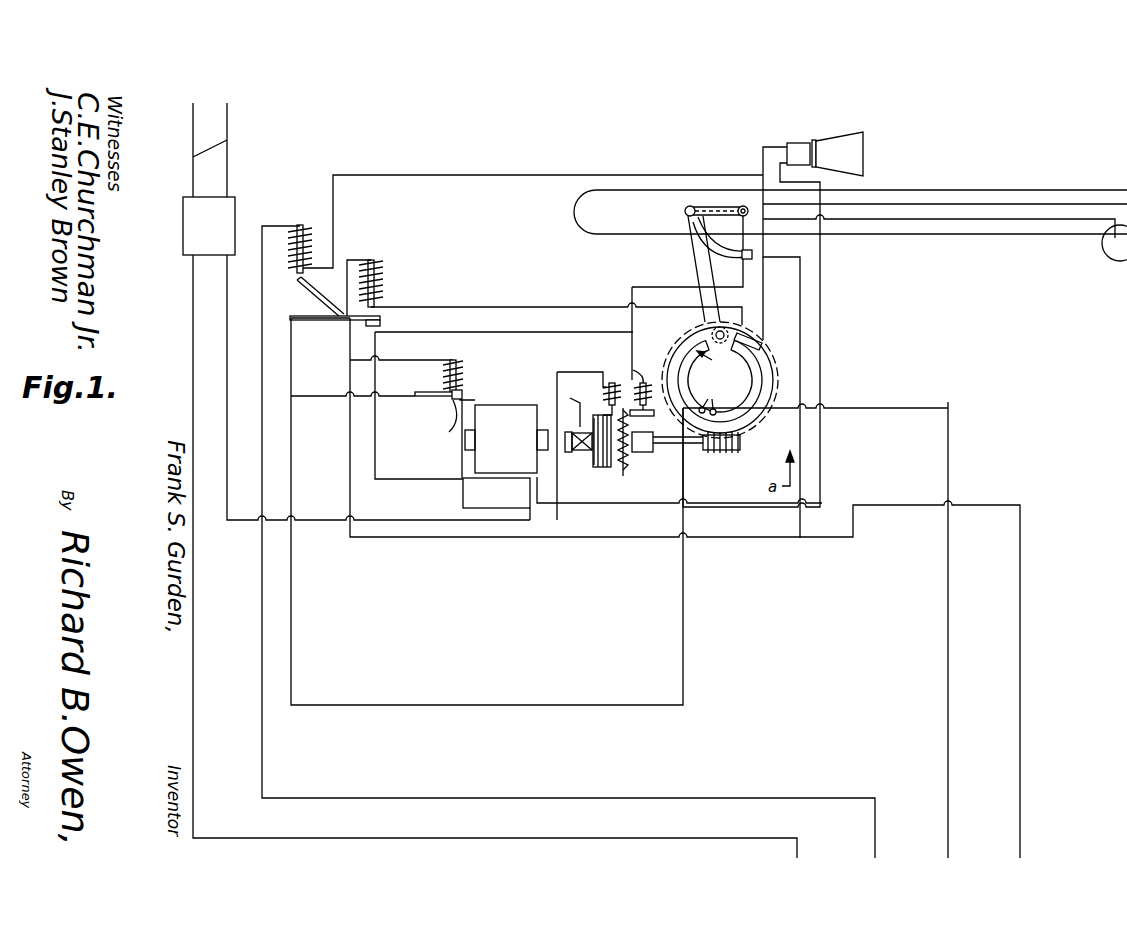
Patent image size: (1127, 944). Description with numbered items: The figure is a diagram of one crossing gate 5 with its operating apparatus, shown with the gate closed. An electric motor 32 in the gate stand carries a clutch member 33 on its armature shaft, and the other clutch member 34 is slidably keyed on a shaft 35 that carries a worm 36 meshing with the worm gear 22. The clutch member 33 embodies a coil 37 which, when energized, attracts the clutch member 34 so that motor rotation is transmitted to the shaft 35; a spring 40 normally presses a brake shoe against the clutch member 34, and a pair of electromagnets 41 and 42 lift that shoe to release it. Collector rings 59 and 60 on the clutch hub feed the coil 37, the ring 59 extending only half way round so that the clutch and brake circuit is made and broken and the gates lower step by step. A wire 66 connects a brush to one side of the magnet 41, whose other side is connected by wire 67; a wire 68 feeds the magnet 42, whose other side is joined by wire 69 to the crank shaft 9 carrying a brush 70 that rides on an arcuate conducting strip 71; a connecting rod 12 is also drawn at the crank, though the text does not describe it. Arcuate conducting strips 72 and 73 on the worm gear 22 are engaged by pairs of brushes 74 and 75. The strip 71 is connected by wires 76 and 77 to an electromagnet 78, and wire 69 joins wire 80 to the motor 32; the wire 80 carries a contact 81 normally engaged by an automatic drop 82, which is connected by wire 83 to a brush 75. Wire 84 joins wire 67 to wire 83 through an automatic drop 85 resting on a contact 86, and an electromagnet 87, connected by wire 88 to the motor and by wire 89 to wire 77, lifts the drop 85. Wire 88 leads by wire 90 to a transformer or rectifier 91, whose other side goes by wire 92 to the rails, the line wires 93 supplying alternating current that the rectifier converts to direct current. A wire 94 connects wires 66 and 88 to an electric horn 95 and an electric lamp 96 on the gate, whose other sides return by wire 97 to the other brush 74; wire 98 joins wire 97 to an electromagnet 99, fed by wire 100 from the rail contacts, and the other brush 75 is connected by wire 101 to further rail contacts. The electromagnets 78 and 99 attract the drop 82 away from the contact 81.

The gate 5 is at (928, 222).
The crank shaft 9 is at (745, 205).
The connecting rod 12 is at (690, 268).
The worm gear 22 is at (684, 336).
The electric motor 32 is at (506, 439).
The clutch member 33 is at (595, 462).
The clutch member 34 is at (625, 478).
The shaft 35 is at (678, 445).
The worm 36 is at (724, 450).
The coil 37 is at (604, 470).
The spring 40 is at (630, 463).
The electromagnet 41 is at (612, 382).
The electromagnet 42 is at (646, 380).
The collector ring 59 is at (583, 452).
The collector ring 60 is at (566, 455).
The wire 66 is at (570, 371).
The wire 67 is at (580, 398).
The wire 68 is at (642, 422).
The wire 69 is at (632, 287).
The brush 70 is at (699, 206).
The arcuate conducting strip 71 is at (738, 262).
The arcuate conducting strip 72 is at (768, 371).
The arcuate conducting strip 73 is at (715, 361).
The brushes 74 is at (760, 338).
The brushes 75 is at (713, 397).
The wire 76 is at (803, 450).
The wire 77 is at (350, 475).
The electromagnet 78 is at (383, 282).
The wire 80 is at (385, 482).
The contact 81 is at (380, 323).
The automatic drop 82 is at (332, 325).
The wire 83 is at (292, 432).
The wire 84 is at (415, 400).
The automatic drop 85 is at (455, 400).
The contact 86 is at (449, 432).
The electromagnet 87 is at (462, 372).
The wire 88 is at (462, 466).
The wire 89 is at (432, 352).
The wire 90 is at (227, 333).
The transformer or rectifier 91 is at (209, 226).
The wire 92 is at (193, 313).
The line wires 93 is at (227, 140).
The wire 94 is at (905, 207).
The electric horn 95 is at (866, 154).
The electric lamp 96 is at (1110, 250).
The wire 97 is at (766, 296).
The wire 98 is at (418, 178).
The electromagnet 99 is at (310, 232).
The wire 100 is at (262, 572).
The wire 101 is at (950, 462).